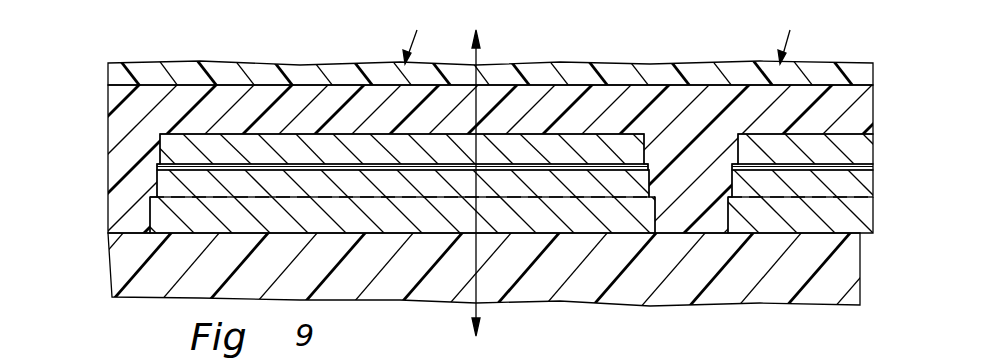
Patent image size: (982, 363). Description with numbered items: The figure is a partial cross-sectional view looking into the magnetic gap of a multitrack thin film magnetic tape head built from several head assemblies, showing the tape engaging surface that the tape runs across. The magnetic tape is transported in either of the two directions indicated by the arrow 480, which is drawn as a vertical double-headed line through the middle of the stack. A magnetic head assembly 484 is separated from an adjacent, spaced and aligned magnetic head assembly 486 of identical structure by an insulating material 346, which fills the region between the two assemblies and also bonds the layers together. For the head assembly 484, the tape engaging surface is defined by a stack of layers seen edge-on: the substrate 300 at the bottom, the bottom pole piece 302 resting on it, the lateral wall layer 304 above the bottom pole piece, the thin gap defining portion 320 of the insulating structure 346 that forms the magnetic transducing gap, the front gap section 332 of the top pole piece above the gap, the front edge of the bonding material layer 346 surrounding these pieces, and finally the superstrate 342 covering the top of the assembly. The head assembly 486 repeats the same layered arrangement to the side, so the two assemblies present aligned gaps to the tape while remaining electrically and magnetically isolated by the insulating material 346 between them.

The substrate 300 is at (125, 266).
The bottom pole piece 302 is at (157, 217).
The lateral wall layer 304 is at (165, 183).
The thin gap defining portion 320 is at (167, 167).
The front gap section 332 is at (172, 145).
The superstrate 342 is at (118, 76).
The insulating material 346 is at (125, 103).
The arrow 480 is at (478, 52).
The magnetic head assembly 484 is at (420, 36).
The adjacent magnetic head assembly 486 is at (787, 36).